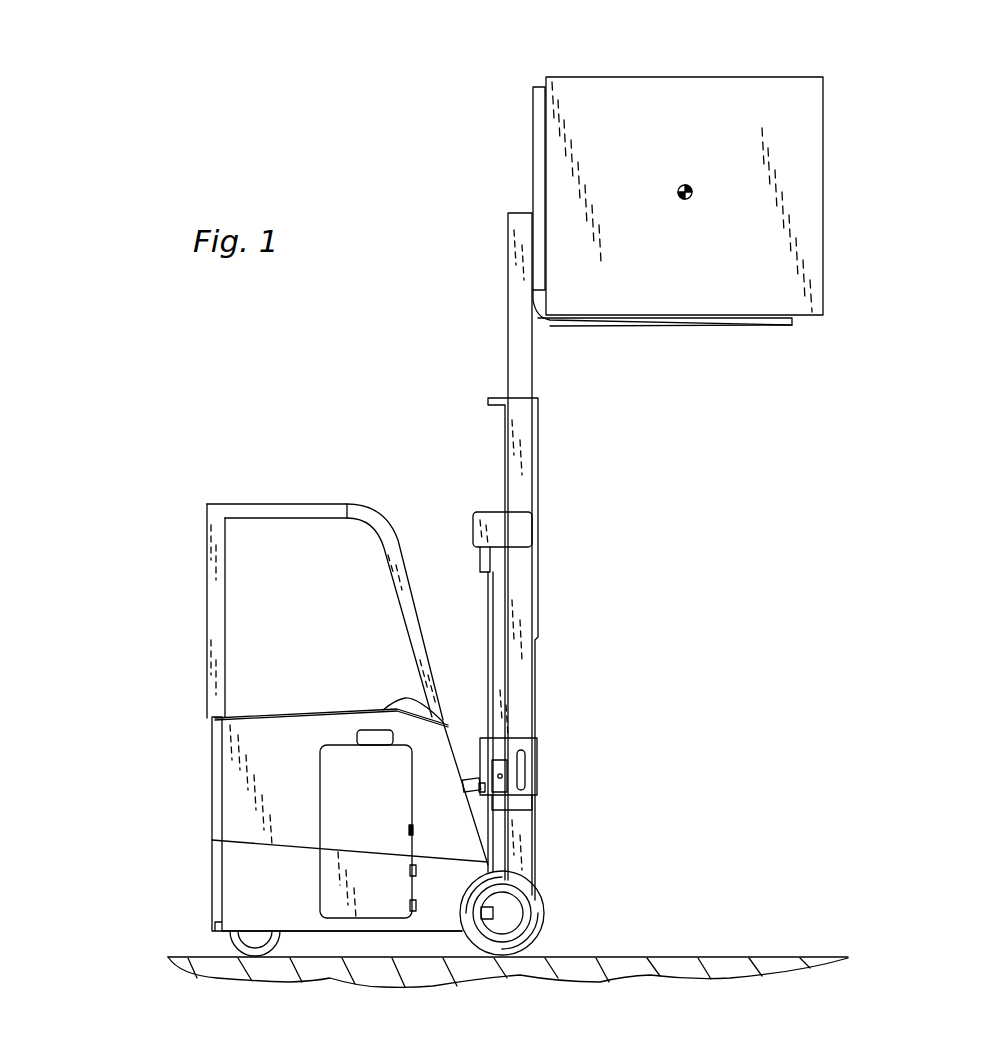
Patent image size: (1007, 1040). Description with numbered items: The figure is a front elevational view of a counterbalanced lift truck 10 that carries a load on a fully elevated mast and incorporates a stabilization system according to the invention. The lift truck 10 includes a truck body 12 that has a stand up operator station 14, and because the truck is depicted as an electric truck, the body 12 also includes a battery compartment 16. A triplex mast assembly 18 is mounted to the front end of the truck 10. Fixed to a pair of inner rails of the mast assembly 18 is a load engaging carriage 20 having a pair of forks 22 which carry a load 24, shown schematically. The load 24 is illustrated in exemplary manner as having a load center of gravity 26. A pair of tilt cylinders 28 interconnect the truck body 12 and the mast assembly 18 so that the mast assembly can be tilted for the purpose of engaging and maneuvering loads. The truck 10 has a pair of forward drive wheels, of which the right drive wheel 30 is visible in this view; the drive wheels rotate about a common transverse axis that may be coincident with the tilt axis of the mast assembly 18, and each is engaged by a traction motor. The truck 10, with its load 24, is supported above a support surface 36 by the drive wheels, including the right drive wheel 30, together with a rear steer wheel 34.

The counterbalanced lift truck 10 is at (133, 764).
The truck body 12 is at (243, 853).
The stand up operator station 14 is at (300, 675).
The battery compartment 16 is at (340, 760).
The triplex mast assembly 18 is at (520, 663).
The load engaging carriage 20 is at (520, 282).
The forks 22 is at (726, 328).
The load 24 is at (795, 103).
The load center of gravity 26 is at (692, 195).
The tilt cylinders 28 is at (482, 802).
The right drive wheel 30 is at (537, 927).
The rear steer wheel 34 is at (240, 946).
The support surface 36 is at (793, 957).